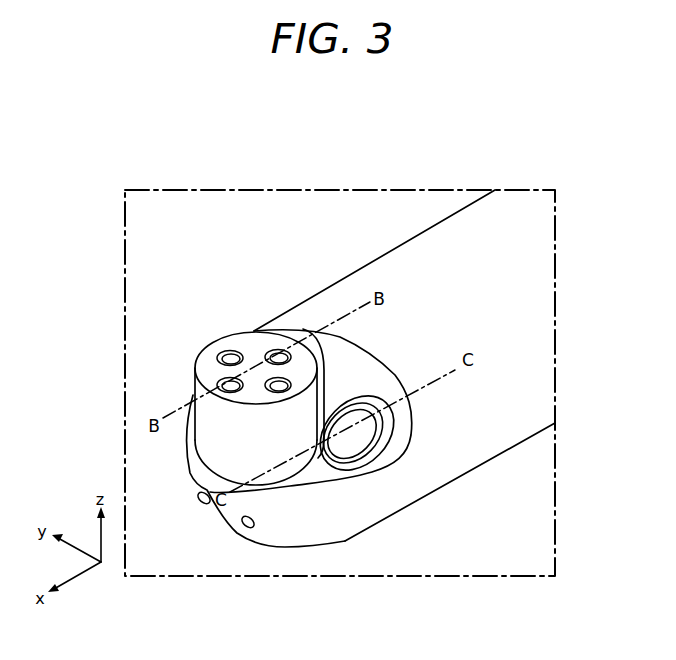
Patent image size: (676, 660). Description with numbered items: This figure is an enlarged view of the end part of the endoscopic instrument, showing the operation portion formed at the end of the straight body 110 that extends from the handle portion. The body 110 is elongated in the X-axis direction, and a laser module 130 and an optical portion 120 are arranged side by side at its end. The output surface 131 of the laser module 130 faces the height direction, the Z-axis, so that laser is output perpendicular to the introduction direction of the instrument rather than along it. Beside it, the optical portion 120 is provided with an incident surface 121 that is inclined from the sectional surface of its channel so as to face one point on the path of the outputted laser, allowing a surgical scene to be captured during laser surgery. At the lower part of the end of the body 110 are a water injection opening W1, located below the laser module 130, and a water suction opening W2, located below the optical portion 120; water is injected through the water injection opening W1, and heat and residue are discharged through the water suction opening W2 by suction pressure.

The body 110 is at (448, 242).
The optical portion 120 is at (382, 446).
The incident surface 121 is at (324, 448).
The laser module 130 is at (193, 351).
The output surface 131 is at (228, 362).
The water injection opening W1 is at (203, 504).
The water suction opening W2 is at (247, 527).